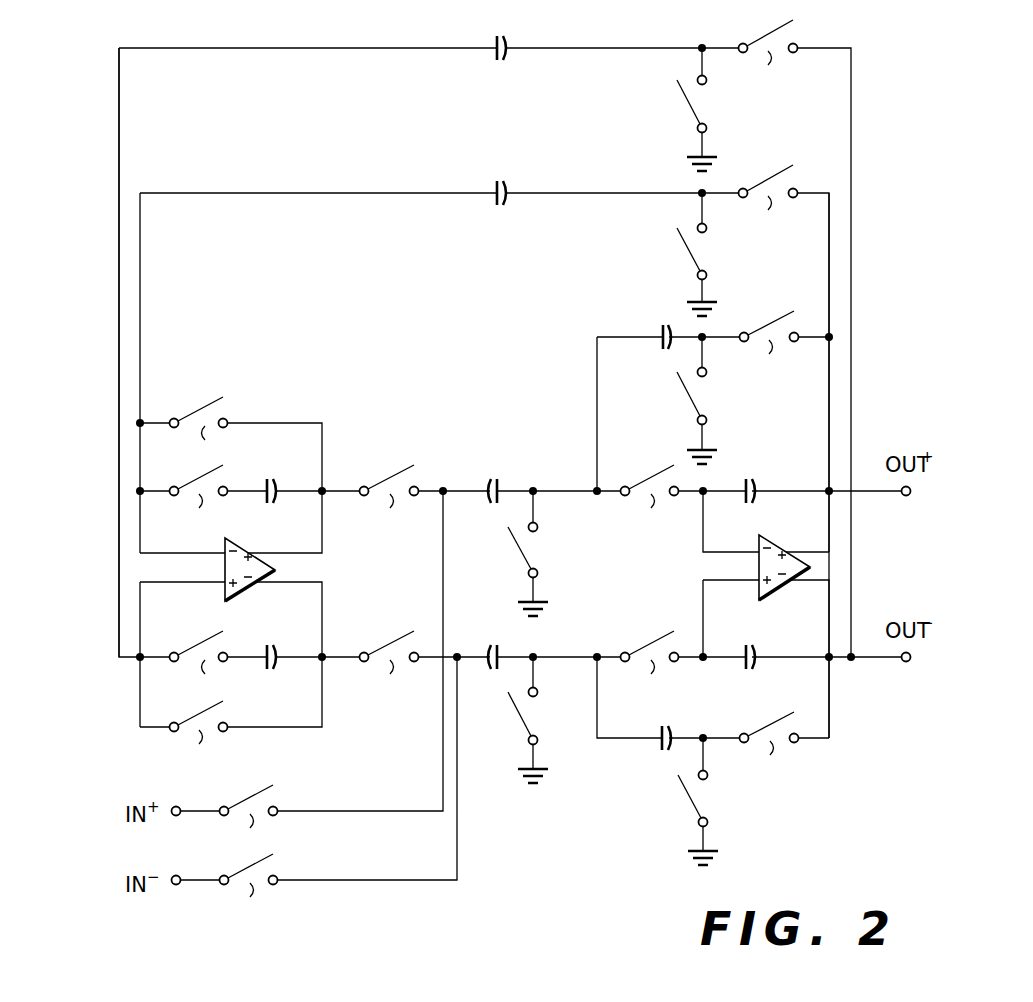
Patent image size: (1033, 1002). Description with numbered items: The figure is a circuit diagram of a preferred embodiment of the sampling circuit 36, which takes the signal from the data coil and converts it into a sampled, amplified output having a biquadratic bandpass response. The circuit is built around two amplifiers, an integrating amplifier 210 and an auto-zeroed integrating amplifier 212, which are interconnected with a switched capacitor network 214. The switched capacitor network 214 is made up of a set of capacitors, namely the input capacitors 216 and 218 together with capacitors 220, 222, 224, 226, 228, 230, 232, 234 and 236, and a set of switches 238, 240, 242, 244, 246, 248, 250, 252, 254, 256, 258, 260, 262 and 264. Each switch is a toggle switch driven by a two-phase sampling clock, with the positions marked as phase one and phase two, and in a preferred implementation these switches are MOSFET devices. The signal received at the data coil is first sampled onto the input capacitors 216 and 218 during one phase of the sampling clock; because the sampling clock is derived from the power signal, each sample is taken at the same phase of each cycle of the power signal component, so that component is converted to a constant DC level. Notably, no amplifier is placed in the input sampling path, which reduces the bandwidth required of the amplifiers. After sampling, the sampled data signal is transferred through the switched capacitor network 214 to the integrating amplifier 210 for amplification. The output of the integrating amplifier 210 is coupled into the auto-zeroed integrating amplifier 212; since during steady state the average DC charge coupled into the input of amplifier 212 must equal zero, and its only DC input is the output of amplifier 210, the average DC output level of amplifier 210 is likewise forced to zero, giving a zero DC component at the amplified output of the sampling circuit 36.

The sampling circuit 36 is at (106, 441).
The switched capacitor network 214 is at (864, 354).
The integrating amplifier 210 is at (760, 600).
The auto-zeroed integrating amplifier 212 is at (225, 602).
The input capacitor 216 is at (490, 645).
The input capacitor 218 is at (490, 480).
The capacitor 220 is at (278, 647).
The capacitor 222 is at (278, 481).
The capacitor 224 is at (496, 60).
The capacitor 226 is at (494, 204).
The capacitor 228 is at (660, 347).
The capacitor 230 is at (755, 480).
The capacitor 232 is at (758, 646).
The capacitor 234 is at (659, 749).
The capacitor 236 is at (240, 814).
The switch 238 is at (190, 730).
The switch 240 is at (213, 661).
The switch 242 is at (190, 496).
The switch 244 is at (215, 425).
The switch 246 is at (387, 495).
The switch 248 is at (379, 661).
The switch 250 is at (737, 94).
The switch 252 is at (737, 239).
The switch 254 is at (738, 386).
The switch 256 is at (648, 496).
The switch 258 is at (535, 550).
The switch 260 is at (708, 705).
The switch 262 is at (535, 716).
The switch 264 is at (702, 802).